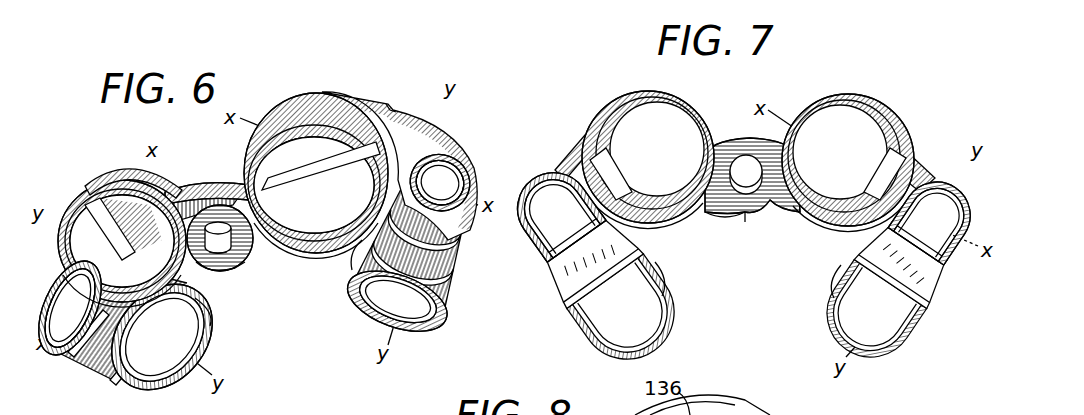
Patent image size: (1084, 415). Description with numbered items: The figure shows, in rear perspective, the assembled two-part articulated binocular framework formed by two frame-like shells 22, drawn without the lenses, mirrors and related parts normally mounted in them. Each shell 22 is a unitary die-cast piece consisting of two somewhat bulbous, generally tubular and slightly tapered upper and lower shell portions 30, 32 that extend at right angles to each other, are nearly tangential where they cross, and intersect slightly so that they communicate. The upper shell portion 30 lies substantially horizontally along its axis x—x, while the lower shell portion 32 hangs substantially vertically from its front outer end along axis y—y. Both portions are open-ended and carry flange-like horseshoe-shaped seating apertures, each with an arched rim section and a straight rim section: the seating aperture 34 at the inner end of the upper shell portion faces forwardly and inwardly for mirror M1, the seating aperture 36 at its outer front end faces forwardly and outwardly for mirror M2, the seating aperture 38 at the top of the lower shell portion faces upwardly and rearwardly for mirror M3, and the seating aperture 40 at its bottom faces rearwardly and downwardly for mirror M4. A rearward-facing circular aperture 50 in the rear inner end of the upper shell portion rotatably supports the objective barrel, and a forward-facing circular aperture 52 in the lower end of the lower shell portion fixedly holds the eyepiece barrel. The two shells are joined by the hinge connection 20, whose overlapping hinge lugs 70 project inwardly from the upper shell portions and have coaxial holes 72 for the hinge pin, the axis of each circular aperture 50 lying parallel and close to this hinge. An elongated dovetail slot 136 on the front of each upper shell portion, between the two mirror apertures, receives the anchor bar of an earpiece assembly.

In FIG. 6, the hinge connection 20 is at (216, 177).
In FIG. 7, the hinge connection 20 is at (736, 135).
In FIG. 6, the shell 22 is at (218, 280).
In FIG. 7, the shell 22 is at (768, 220).
In FIG. 6, the upper shell portion 30 is at (437, 118).
In FIG. 7, the upper shell portion 30 is at (570, 152).
In FIG. 6, the lower shell portion 32 is at (96, 365).
In FIG. 7, the lower shell portion 32 is at (634, 255).
In FIG. 6, the seating aperture 34 is at (132, 165).
In FIG. 7, the seating aperture 34 is at (646, 192).
In FIG. 6, the seating aperture 36 is at (446, 146).
In FIG. 7, the seating aperture 36 is at (549, 244).
In FIG. 6, the seating aperture 38 is at (458, 163).
In FIG. 7, the seating aperture 38 is at (540, 174).
In FIG. 6, the seating aperture 40 is at (160, 388).
In FIG. 7, the seating aperture 40 is at (672, 318).
In FIG. 6, the circular aperture 50 is at (63, 242).
In FIG. 7, the circular aperture 50 is at (662, 220).
In FIG. 6, the circular aperture 52 is at (212, 322).
In FIG. 7, the circular aperture 52 is at (665, 283).
In FIG. 6, the hinge lug 70 is at (198, 190).
In FIG. 7, the hinge lug 70 is at (734, 202).
In FIG. 6, the coaxial hole 72 is at (264, 250).
In FIG. 7, the coaxial hole 72 is at (752, 158).
In FIG. 6, the dovetail slot 136 is at (394, 108).